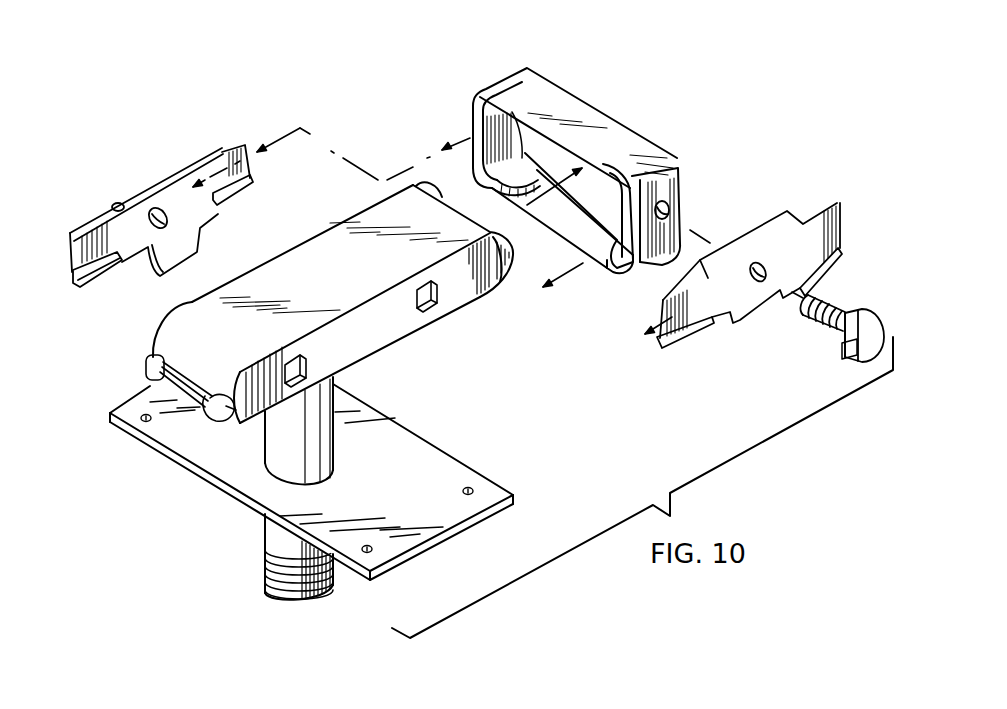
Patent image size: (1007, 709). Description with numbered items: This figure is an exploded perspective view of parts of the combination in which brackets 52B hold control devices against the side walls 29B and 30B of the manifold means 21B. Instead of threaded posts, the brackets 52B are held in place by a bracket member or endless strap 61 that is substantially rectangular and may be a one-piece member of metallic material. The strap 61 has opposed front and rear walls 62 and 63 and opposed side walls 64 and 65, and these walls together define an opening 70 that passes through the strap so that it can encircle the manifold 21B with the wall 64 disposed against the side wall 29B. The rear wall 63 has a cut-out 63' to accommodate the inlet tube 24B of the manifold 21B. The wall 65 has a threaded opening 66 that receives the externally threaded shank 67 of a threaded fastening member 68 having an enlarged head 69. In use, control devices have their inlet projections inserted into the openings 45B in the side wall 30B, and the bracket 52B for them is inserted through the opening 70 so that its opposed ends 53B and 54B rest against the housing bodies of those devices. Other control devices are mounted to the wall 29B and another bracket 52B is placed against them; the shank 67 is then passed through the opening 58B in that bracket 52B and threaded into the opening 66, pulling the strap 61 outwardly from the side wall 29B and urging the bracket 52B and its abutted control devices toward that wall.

The manifold means 21B is at (352, 302).
The inlet tube 24B is at (332, 442).
The side wall 29B is at (360, 342).
The side wall 30B is at (196, 295).
The openings 45B is at (297, 361).
The bracket 52B is at (465, 239).
The end of bracket 53B is at (226, 150).
The end of bracket 54B is at (71, 258).
The opening in bracket 58B is at (168, 212).
The endless strap 61 is at (572, 153).
The front wall 62 is at (600, 122).
The rear wall 63 is at (579, 211).
The cut-out 63' is at (575, 212).
The side wall of strap 64 is at (471, 126).
The side wall of strap 65 is at (674, 226).
The threaded opening 66 is at (670, 208).
The threaded shank 67 is at (827, 350).
The threaded fastening member 68 is at (830, 357).
The enlarged head 69 is at (847, 355).
The opening 70 is at (532, 203).